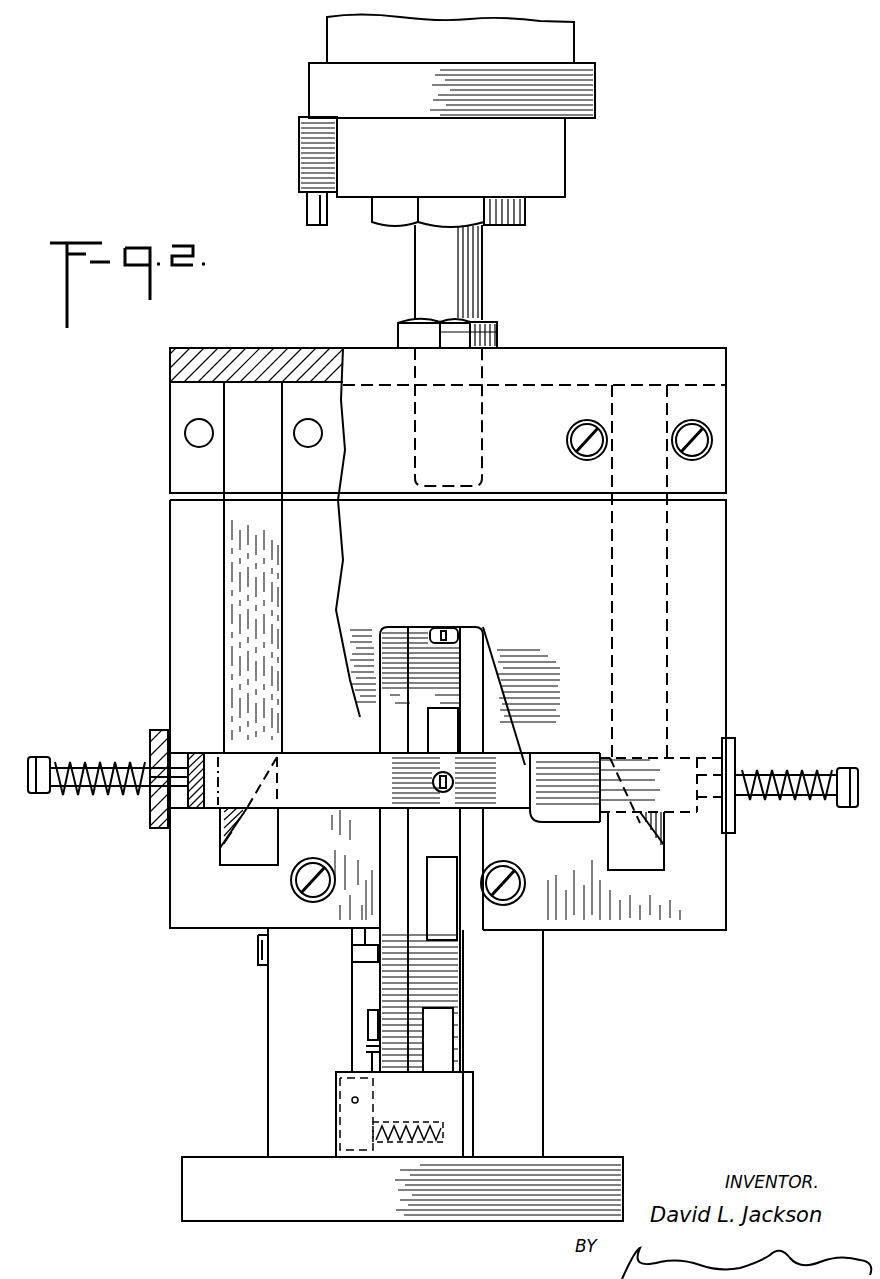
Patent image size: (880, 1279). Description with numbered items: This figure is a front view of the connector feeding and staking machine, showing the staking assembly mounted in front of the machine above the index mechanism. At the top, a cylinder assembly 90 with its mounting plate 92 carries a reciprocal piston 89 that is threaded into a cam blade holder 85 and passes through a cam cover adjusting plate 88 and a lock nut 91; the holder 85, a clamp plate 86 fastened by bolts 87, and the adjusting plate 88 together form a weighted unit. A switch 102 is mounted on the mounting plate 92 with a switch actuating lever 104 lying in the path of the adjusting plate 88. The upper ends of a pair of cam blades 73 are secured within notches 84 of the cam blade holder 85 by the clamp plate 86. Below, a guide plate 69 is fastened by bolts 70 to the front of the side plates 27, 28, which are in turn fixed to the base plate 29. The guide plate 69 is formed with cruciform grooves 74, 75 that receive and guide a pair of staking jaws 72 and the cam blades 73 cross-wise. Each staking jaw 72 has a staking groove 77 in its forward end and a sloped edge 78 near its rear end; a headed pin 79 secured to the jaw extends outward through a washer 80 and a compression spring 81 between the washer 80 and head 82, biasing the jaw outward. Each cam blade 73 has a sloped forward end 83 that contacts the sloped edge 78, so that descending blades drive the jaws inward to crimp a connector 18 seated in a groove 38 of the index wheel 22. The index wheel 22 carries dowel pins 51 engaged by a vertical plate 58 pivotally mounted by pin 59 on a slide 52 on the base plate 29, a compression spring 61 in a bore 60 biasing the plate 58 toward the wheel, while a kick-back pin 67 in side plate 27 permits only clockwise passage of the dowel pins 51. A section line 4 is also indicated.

The section line 4- 4 is at (452, 50).
The connector 18 is at (437, 628).
The index wheel 22 is at (445, 962).
The side plate 27 is at (285, 1068).
The side plate 28 is at (532, 968).
The base plate 29 is at (585, 1165).
The groove 38 is at (445, 722).
The dowel pin 51 is at (368, 1027).
The slide 52 is at (463, 1085).
The vertical plate 58 is at (372, 1055).
The pin 59 is at (350, 1098).
The bore 60 is at (423, 1145).
The compression spring 61 is at (418, 1122).
The kick-back pin 67 is at (362, 962).
The guide plate 69 is at (168, 893).
The bolt 70 is at (315, 902).
The staking jaw 72 is at (602, 724).
The cam blade 73 is at (228, 530).
The cruciform groove 74 is at (235, 858).
The cruciform groove 75 is at (630, 868).
The staking groove 77 is at (437, 778).
The sloped edge 78 is at (272, 780).
The headed pin 79 is at (72, 762).
The washer 80 is at (155, 735).
The compression spring 81 is at (85, 798).
The head 82 is at (38, 797).
The sloped forward end 83 is at (237, 832).
The notch 84 is at (228, 440).
The cam blade holder 85 is at (183, 402).
The clamp plate 86 is at (345, 404).
The bolt 87 is at (568, 438).
The cam cover adjusting plate 88 is at (290, 362).
The reciprocal piston 89 is at (470, 270).
The cylinder assembly 90 is at (604, 78).
The lock nut 91 is at (495, 333).
The mounting plate 92 is at (560, 171).
The switch 102 is at (302, 156).
The switch actuating lever 104 is at (316, 219).